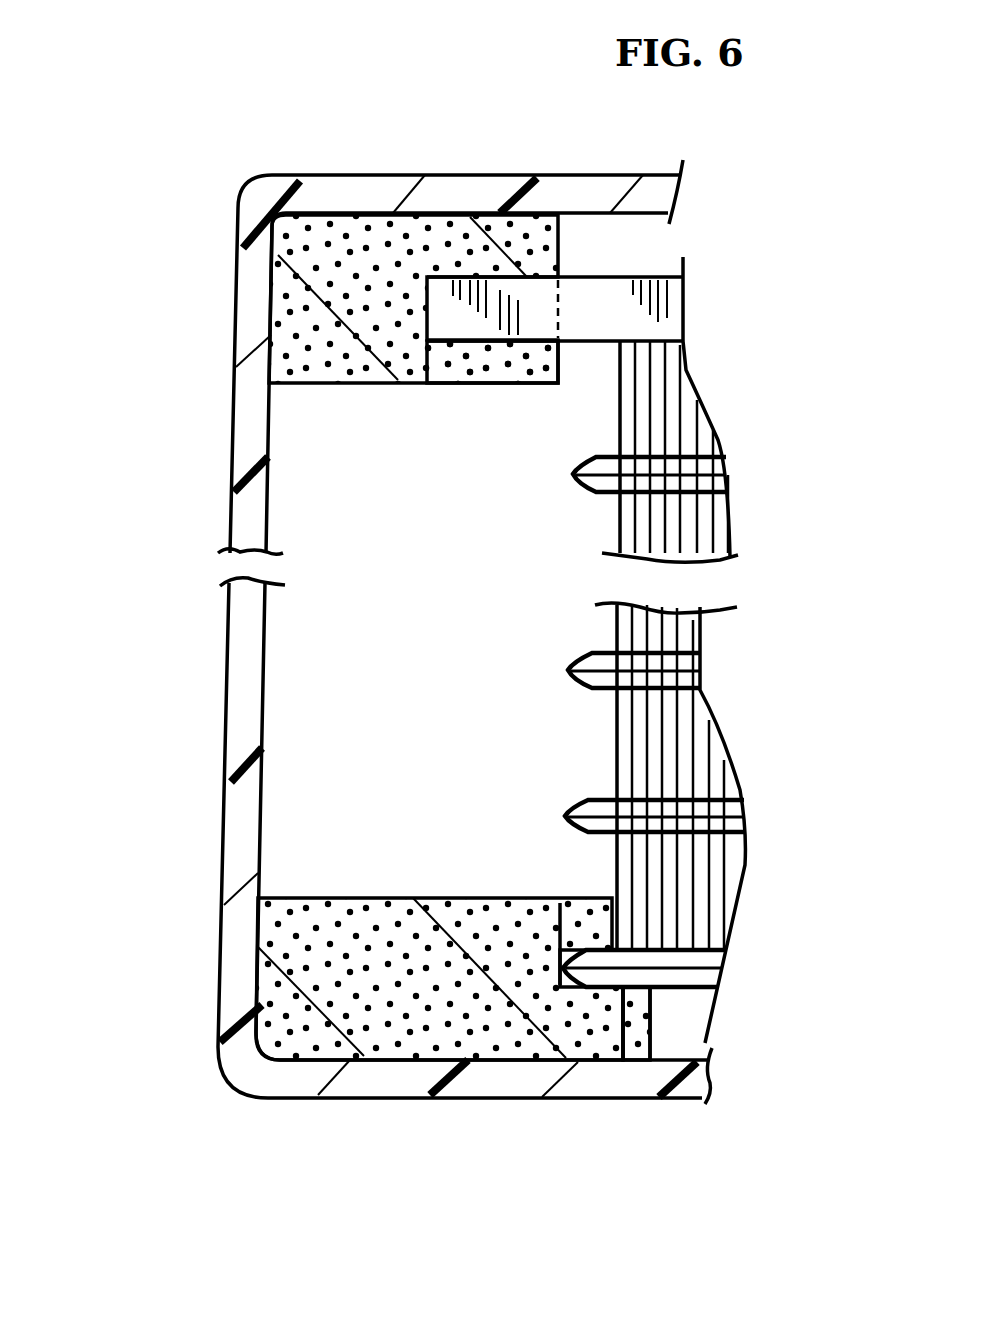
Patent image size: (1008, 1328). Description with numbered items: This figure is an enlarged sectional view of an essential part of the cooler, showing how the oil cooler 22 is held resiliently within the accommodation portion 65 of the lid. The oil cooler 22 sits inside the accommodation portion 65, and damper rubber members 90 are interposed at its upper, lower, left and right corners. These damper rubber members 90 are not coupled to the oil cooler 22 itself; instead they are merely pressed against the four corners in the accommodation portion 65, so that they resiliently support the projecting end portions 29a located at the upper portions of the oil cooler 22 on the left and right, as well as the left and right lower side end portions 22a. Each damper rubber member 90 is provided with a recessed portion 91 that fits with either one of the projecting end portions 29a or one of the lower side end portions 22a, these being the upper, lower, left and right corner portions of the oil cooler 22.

The oil cooler 22 is at (703, 520).
The lower side end portions 22a is at (632, 1062).
The projecting end portions 29a is at (453, 300).
The accommodation portion 65 is at (240, 445).
The damper rubber members 90 is at (278, 293).
The recessed portion 91 is at (478, 373).